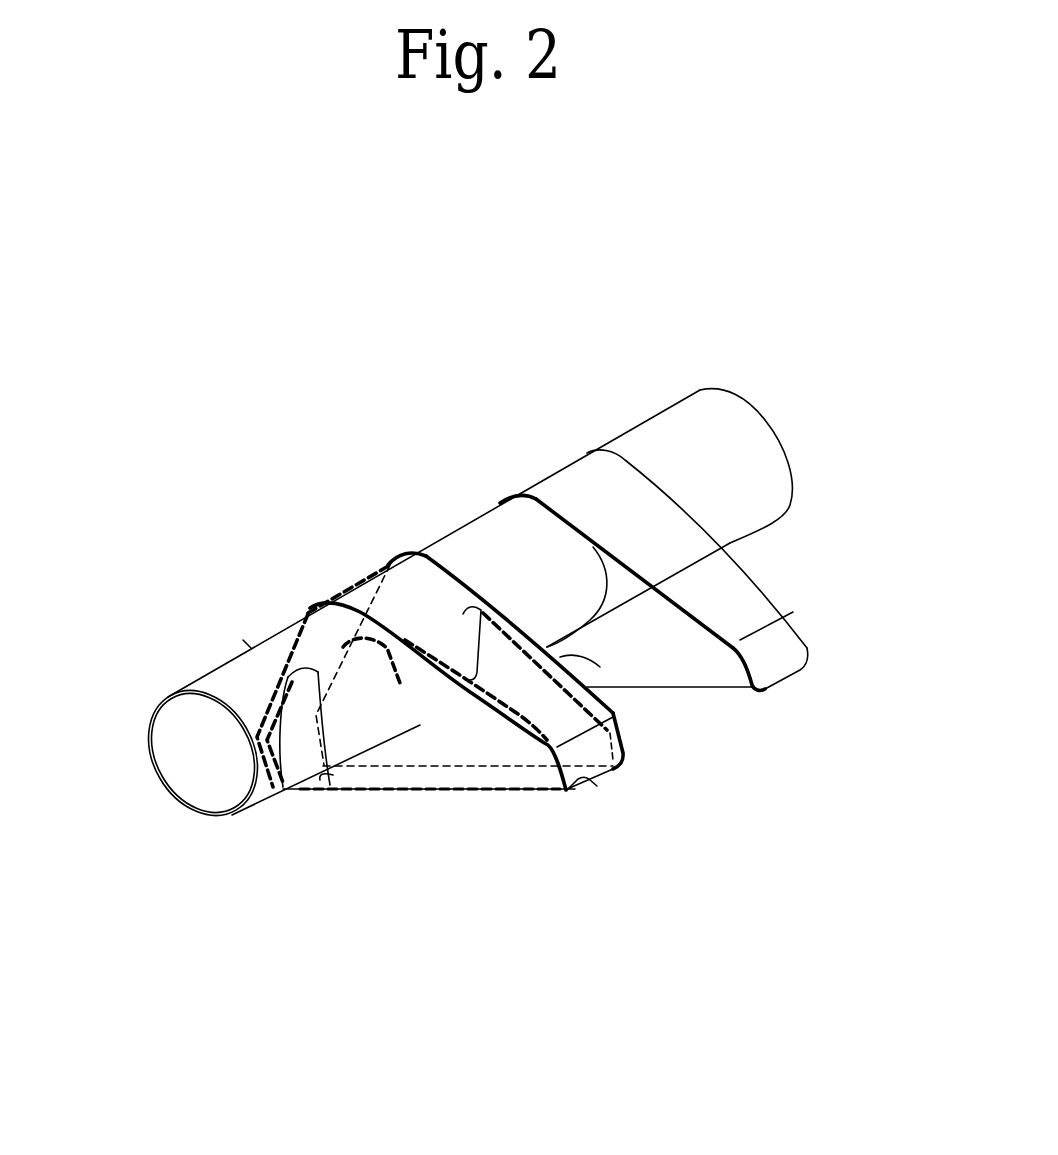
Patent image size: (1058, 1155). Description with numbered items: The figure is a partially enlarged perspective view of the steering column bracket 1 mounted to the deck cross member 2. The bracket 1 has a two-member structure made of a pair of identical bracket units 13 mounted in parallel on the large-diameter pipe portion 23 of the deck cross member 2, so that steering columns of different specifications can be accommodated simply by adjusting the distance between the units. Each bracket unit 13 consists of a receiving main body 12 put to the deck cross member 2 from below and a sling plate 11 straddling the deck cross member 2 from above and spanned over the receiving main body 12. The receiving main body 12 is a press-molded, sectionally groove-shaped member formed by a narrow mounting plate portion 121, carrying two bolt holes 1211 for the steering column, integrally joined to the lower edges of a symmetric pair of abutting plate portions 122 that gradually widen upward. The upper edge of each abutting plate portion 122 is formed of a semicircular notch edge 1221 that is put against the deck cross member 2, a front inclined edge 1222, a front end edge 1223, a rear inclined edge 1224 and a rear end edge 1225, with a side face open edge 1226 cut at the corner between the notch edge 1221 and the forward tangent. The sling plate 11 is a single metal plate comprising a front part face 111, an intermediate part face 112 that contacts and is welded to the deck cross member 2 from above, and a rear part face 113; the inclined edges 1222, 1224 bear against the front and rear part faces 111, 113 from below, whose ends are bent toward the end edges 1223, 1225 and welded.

The steering column bracket 1 is at (389, 379).
The deck cross member 2 is at (672, 400).
The sling plate 11 is at (494, 536).
The front part face 111 is at (295, 650).
The intermediate part face 112 is at (590, 487).
The rear part face 113 is at (693, 527).
The receiving main body 12 is at (470, 749).
The mounting plate portion 121 is at (418, 777).
The abutting plate portion 122 is at (657, 637).
The bolt hole 1211 is at (296, 790).
The notch edge 1221 is at (377, 720).
The front inclined edge 1222 is at (272, 707).
The front end edge 1223 is at (215, 768).
The rear inclined edge 1224 is at (507, 718).
The rear end edge 1225 is at (543, 793).
The side face open edge 1226 is at (291, 783).
The bracket unit 13 is at (527, 487).
The large-diameter pipe portion 23 is at (250, 647).